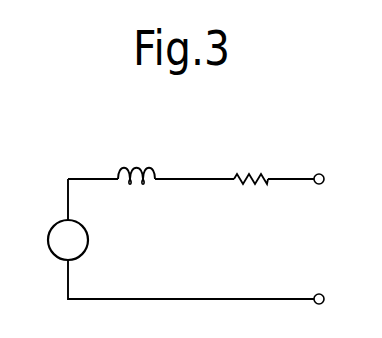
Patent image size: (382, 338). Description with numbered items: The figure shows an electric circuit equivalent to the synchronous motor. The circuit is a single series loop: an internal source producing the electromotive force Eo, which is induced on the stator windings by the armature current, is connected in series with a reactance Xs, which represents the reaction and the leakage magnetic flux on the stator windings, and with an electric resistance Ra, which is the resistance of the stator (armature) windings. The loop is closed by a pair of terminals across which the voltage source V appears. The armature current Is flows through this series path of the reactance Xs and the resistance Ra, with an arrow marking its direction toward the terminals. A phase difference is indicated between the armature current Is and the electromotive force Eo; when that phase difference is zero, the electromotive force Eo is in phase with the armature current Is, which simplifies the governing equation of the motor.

The electromotive force Eo is at (100, 217).
The reactance Xs is at (136, 192).
The electric resistance Ra is at (251, 194).
The armature current Is is at (304, 171).
The voltage source V is at (319, 208).